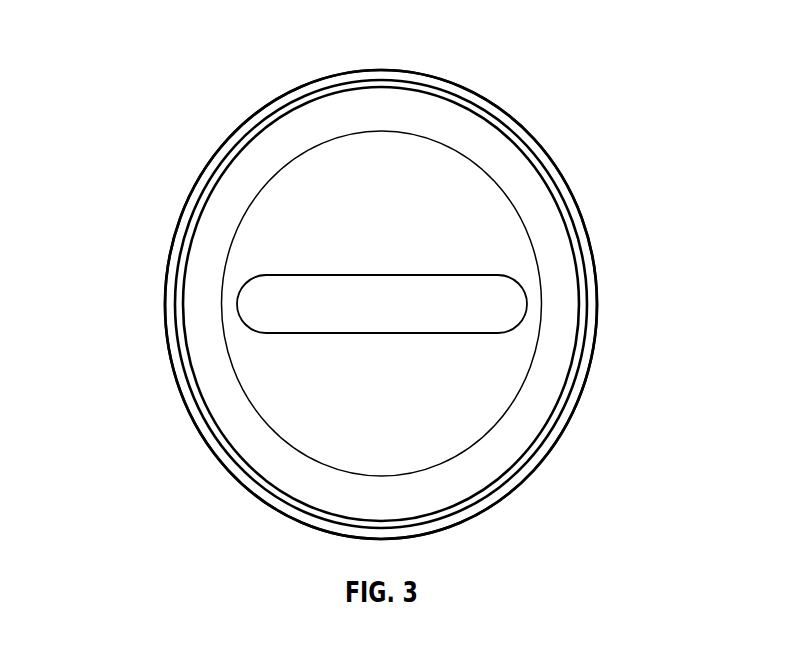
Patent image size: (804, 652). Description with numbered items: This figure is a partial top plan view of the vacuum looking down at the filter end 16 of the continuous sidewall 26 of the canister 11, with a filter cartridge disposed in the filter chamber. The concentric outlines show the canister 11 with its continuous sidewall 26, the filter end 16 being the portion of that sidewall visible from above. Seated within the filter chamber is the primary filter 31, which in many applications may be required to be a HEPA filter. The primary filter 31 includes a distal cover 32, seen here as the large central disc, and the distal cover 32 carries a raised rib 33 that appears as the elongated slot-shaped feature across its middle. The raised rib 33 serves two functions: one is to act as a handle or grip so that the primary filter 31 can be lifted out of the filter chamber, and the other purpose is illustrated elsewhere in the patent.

The canister 11 is at (602, 325).
The continuous sidewall 26 is at (500, 102).
The filter end 16 is at (577, 225).
The primary filter 31 is at (183, 302).
The distal cover 32 is at (325, 213).
The raised rib 33 is at (290, 313).